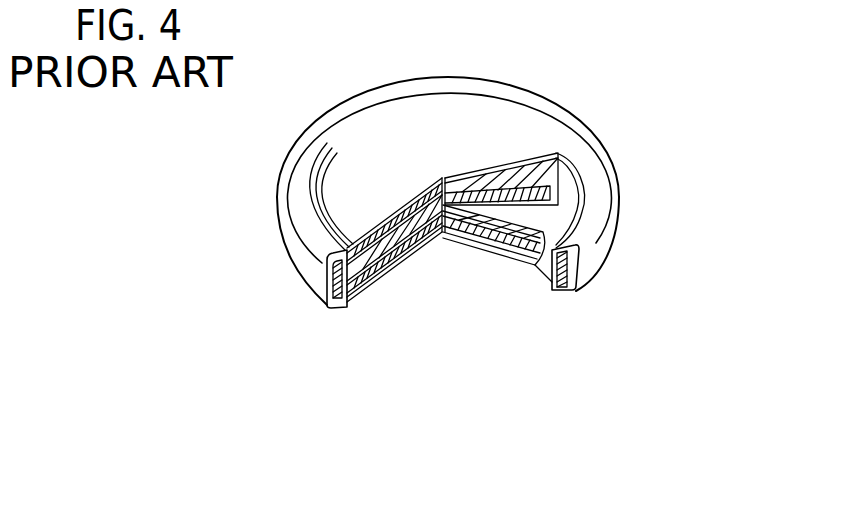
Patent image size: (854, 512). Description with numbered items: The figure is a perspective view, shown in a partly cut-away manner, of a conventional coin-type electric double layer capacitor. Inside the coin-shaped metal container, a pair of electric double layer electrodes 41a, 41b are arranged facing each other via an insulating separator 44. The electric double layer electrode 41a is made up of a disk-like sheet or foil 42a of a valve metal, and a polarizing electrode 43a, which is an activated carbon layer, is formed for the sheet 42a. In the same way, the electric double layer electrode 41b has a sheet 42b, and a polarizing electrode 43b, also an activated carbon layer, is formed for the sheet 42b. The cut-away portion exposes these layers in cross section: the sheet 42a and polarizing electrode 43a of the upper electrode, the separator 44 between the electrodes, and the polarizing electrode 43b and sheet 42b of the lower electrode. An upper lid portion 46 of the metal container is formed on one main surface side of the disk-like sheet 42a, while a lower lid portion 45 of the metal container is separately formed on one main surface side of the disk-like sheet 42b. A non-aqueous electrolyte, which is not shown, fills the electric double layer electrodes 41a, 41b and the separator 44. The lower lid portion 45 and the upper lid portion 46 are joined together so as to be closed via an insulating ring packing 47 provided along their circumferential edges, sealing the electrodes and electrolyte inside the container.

The electric double layer electrode 41a is at (600, 145).
The electric double layer electrode 41b is at (477, 282).
The disk-like sheet 42a is at (548, 170).
The sheet 42b is at (504, 242).
The polarizing electrode 43a is at (548, 188).
The polarizing electrode 43b is at (532, 302).
The insulating separator 44 is at (560, 211).
The lower lid portion 45 is at (332, 299).
The upper lid portion 46 is at (367, 128).
The insulating ring packing 47 is at (565, 289).